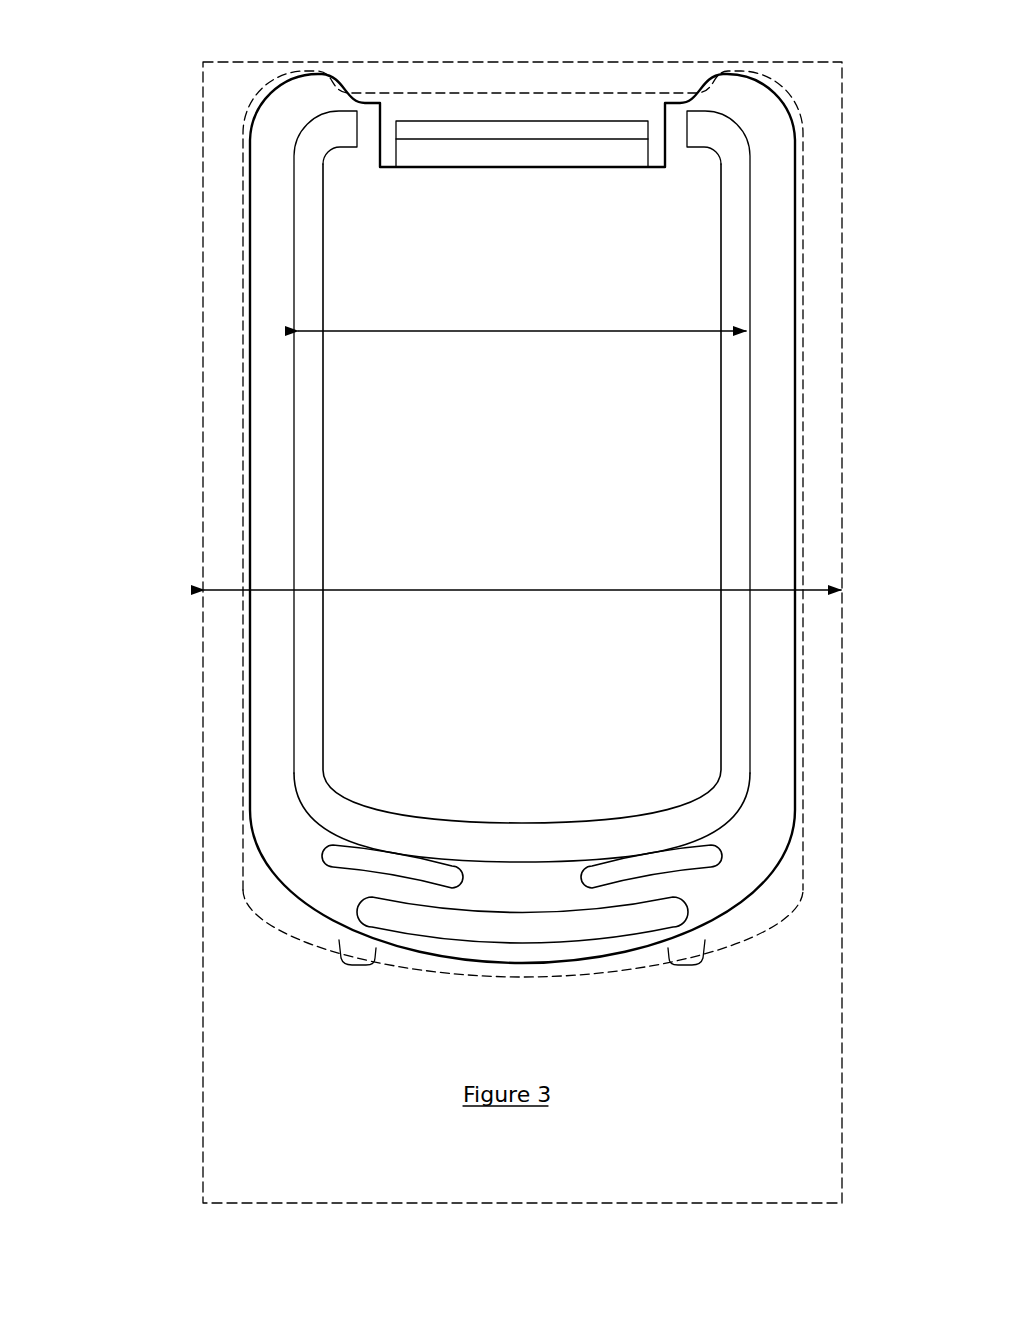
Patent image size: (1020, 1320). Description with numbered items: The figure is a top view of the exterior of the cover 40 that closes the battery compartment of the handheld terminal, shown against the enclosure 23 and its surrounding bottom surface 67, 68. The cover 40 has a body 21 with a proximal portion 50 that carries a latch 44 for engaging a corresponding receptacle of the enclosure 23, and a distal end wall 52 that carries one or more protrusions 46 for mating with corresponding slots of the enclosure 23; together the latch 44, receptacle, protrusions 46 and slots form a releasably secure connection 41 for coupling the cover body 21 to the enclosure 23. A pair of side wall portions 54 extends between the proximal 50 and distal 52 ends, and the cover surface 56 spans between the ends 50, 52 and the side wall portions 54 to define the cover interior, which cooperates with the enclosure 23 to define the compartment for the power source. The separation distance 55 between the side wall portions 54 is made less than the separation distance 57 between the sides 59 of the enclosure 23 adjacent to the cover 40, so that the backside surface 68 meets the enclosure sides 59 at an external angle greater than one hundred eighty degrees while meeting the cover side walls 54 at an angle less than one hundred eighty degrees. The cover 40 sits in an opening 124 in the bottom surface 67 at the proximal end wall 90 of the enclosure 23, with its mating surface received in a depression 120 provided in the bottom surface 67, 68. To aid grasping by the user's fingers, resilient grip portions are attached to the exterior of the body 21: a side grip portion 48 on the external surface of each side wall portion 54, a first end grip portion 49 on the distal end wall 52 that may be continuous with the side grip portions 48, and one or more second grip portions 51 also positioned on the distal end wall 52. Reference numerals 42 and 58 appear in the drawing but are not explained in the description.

The cover 40 is at (128, 98).
The connection 41 is at (461, 49).
The latch 44 is at (510, 125).
The proximal end portion 50 is at (670, 35).
The proximal end wall 90 is at (780, 245).
The cover body 21 is at (782, 295).
The side wall portions 54 is at (265, 355).
The separation distance 55 is at (462, 331).
The cover surface 56 is at (510, 485).
The separation distance 57 is at (488, 586).
The enclosure sides 59 is at (203, 479).
The side grip portion 48 is at (300, 503).
The first end grip portion 49 is at (560, 848).
The lower housing portion 42 is at (780, 860).
The backside surface 68 is at (230, 725).
The enclosure 23 is at (190, 835).
The opening 124 is at (238, 886).
The distal end wall 52 is at (300, 885).
The protrusions 46 is at (350, 958).
The depression 120 is at (480, 977).
The second grip portions 51 is at (436, 873).
The corner 58 is at (718, 886).
The bottom surface 67 is at (267, 1112).